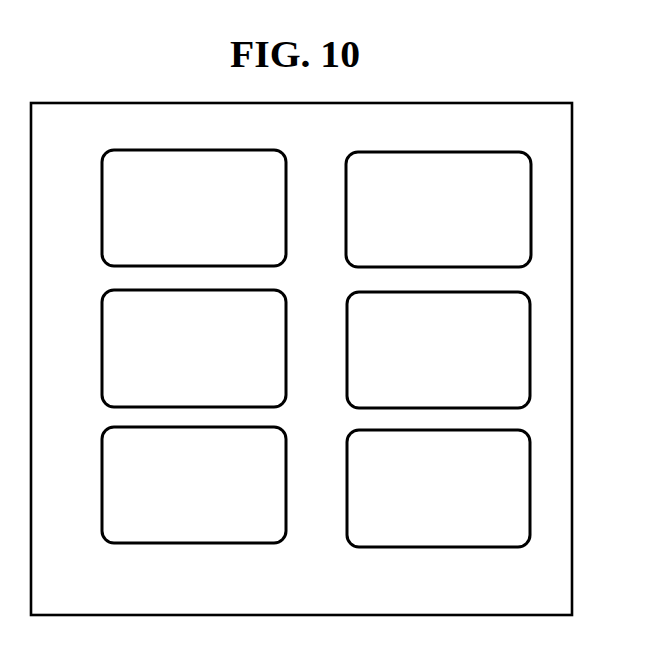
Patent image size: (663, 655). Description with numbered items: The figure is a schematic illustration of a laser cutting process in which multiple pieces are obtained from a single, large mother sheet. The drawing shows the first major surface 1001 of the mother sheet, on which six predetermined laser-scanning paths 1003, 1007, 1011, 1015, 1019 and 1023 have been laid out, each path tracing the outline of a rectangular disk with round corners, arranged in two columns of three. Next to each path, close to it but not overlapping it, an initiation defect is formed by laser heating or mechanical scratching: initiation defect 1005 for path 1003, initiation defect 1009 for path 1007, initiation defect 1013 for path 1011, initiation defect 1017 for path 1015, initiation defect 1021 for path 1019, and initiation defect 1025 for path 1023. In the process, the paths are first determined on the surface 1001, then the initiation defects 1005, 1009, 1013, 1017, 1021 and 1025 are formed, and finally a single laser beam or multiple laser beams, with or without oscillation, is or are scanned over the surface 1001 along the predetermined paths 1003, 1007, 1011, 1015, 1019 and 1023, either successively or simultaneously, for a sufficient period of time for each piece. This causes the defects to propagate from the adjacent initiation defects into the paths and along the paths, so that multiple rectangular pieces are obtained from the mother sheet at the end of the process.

The first major surface 1001 is at (96, 135).
The predetermined laser-scanning path 1003 is at (213, 217).
The initiation defect 1005 is at (108, 266).
The predetermined laser-scanning path 1007 is at (461, 217).
The initiation defect 1009 is at (347, 268).
The predetermined laser-scanning path 1011 is at (214, 360).
The initiation defect 1013 is at (108, 407).
The predetermined laser-scanning path 1015 is at (460, 362).
The initiation defect 1017 is at (347, 408).
The predetermined laser-scanning path 1019 is at (213, 493).
The initiation defect 1021 is at (108, 543).
The predetermined laser-scanning path 1023 is at (461, 493).
The initiation defect 1025 is at (347, 547).